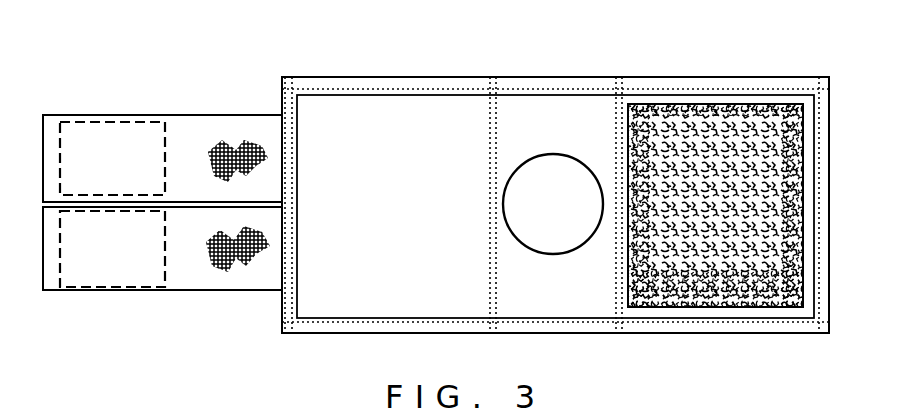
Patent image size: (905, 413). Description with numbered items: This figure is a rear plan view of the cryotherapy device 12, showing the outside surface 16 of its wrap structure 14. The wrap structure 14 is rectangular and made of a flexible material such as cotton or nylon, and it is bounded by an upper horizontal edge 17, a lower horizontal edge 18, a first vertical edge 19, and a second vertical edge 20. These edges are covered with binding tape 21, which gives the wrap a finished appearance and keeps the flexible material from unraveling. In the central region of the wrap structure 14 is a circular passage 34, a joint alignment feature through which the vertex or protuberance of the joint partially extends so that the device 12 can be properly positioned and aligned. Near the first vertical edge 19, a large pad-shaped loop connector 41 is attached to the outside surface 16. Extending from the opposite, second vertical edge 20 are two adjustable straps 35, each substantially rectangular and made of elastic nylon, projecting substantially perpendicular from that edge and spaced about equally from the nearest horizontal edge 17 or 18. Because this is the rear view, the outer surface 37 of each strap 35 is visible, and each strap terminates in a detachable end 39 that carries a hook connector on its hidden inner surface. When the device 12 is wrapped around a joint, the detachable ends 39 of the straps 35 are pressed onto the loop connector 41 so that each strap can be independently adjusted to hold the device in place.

The portable device 12 is at (255, 68).
The wrap structure 14 is at (596, 75).
The outside surface 16 is at (434, 217).
The upper horizontal edge 17 is at (337, 77).
The lower horizontal edge 18 is at (376, 334).
The first vertical edge 19 is at (829, 137).
The second vertical edge 20 is at (283, 302).
The binding tape 21 is at (400, 88).
The circular passage 34 is at (563, 217).
The adjustable strap 35 is at (162, 112).
The outer surface 37 is at (206, 118).
The detachable end 39 is at (48, 114).
The loop connector 41 is at (720, 110).